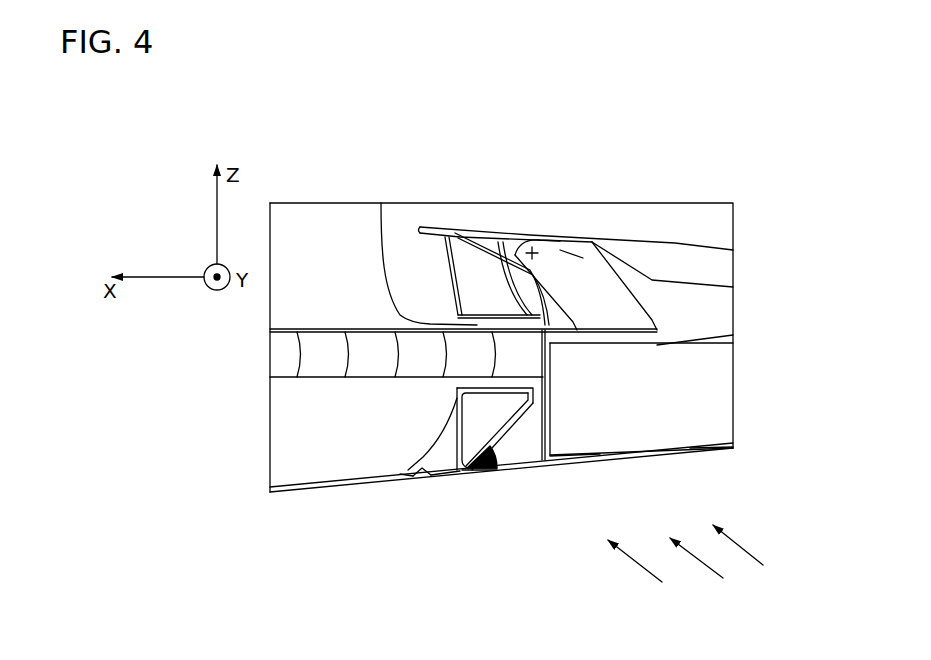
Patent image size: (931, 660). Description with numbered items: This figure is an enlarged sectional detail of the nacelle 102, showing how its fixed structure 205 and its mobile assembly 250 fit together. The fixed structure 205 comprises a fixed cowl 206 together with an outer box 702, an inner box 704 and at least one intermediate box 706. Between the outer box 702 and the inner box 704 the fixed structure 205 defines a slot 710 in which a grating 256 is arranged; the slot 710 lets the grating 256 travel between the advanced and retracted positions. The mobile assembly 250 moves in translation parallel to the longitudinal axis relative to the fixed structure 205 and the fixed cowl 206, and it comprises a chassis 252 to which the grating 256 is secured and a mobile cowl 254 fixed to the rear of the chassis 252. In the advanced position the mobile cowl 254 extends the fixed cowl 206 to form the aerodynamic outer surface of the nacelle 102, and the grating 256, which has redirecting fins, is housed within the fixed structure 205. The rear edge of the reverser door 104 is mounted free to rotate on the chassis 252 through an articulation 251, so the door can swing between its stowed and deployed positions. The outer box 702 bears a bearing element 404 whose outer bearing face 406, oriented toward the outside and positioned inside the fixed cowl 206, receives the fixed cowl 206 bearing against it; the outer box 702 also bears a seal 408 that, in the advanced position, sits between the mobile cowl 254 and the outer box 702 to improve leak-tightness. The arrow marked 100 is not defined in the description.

The aircraft 100 is at (711, 577).
The nacelle 102 is at (763, 553).
The reverser door 104 is at (710, 278).
The fixed structure 205 is at (320, 173).
The fixed cowl 206 is at (348, 483).
The mobile assembly 250 is at (647, 578).
The articulation 251 is at (548, 266).
The chassis 252 is at (548, 449).
The mobile cowl 254 is at (720, 443).
The grating 256 is at (317, 363).
The bearing element 404 is at (435, 458).
The outer bearing face 406 is at (415, 470).
The seal 408 is at (480, 473).
The outer box 702 is at (557, 533).
The inner box 704 is at (473, 267).
The intermediate box 706 is at (497, 245).
The slot 710 is at (381, 203).